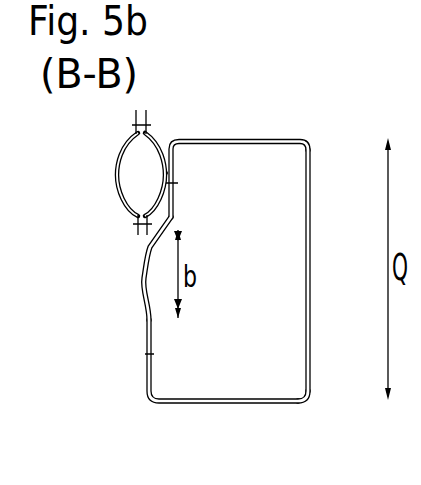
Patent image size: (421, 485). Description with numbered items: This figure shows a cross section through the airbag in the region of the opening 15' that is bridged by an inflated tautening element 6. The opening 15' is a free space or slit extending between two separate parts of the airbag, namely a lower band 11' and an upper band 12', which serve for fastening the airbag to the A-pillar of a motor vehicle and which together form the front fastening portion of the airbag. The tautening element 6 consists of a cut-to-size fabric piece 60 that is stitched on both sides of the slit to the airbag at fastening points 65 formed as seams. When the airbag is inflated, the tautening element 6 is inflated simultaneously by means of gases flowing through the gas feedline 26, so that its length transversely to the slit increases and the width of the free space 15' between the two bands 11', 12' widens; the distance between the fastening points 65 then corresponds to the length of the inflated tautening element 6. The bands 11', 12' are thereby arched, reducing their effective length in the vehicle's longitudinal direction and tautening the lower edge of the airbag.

The tautening element 6 is at (219, 256).
The cut-to-size fabric piece 60 is at (312, 257).
The fastening points 65 is at (170, 182).
The opening 15' is at (124, 271).
The lower band 11' is at (183, 380).
The upper band 12' is at (105, 173).
The gas feedline 26 is at (130, 170).